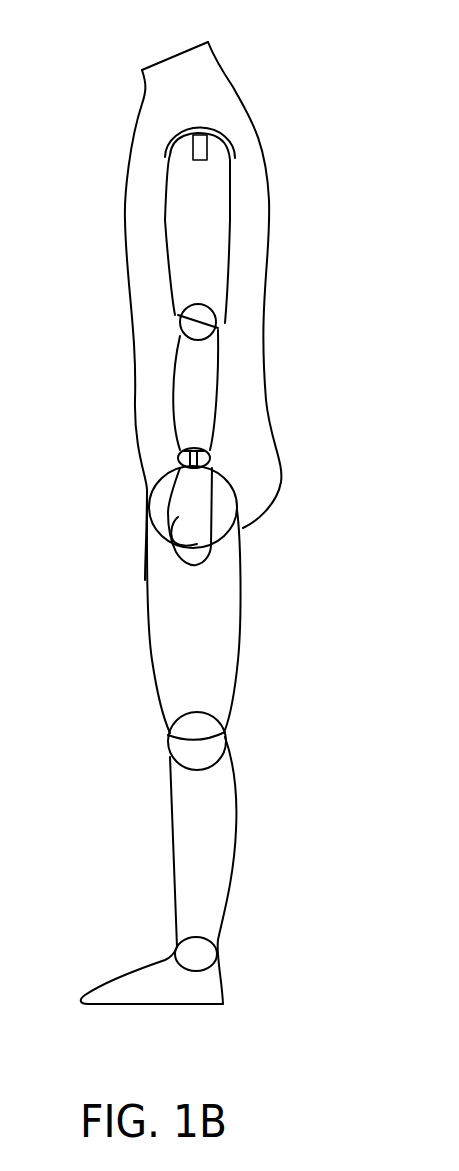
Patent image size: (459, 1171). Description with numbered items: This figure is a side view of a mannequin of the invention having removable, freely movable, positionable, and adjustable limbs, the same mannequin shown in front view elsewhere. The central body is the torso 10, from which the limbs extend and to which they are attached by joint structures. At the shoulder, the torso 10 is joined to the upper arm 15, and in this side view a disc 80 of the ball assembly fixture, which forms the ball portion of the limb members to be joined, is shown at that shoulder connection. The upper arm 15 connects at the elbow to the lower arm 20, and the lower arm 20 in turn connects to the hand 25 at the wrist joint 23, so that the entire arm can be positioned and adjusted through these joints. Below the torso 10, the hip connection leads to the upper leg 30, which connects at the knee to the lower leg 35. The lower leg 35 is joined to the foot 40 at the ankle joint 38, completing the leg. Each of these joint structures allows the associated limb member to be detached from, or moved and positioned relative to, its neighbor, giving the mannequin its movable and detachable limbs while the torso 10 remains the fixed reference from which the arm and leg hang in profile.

The torso 10 is at (198, 115).
The disc 80 is at (203, 145).
The upper arm 15 is at (203, 235).
The lower arm 20 is at (202, 394).
The wrist joint 23 is at (210, 463).
The hand 25 is at (193, 532).
The upper leg 30 is at (197, 630).
The lower leg 35 is at (215, 822).
The ankle joint 38 is at (202, 948).
The foot 40 is at (207, 993).